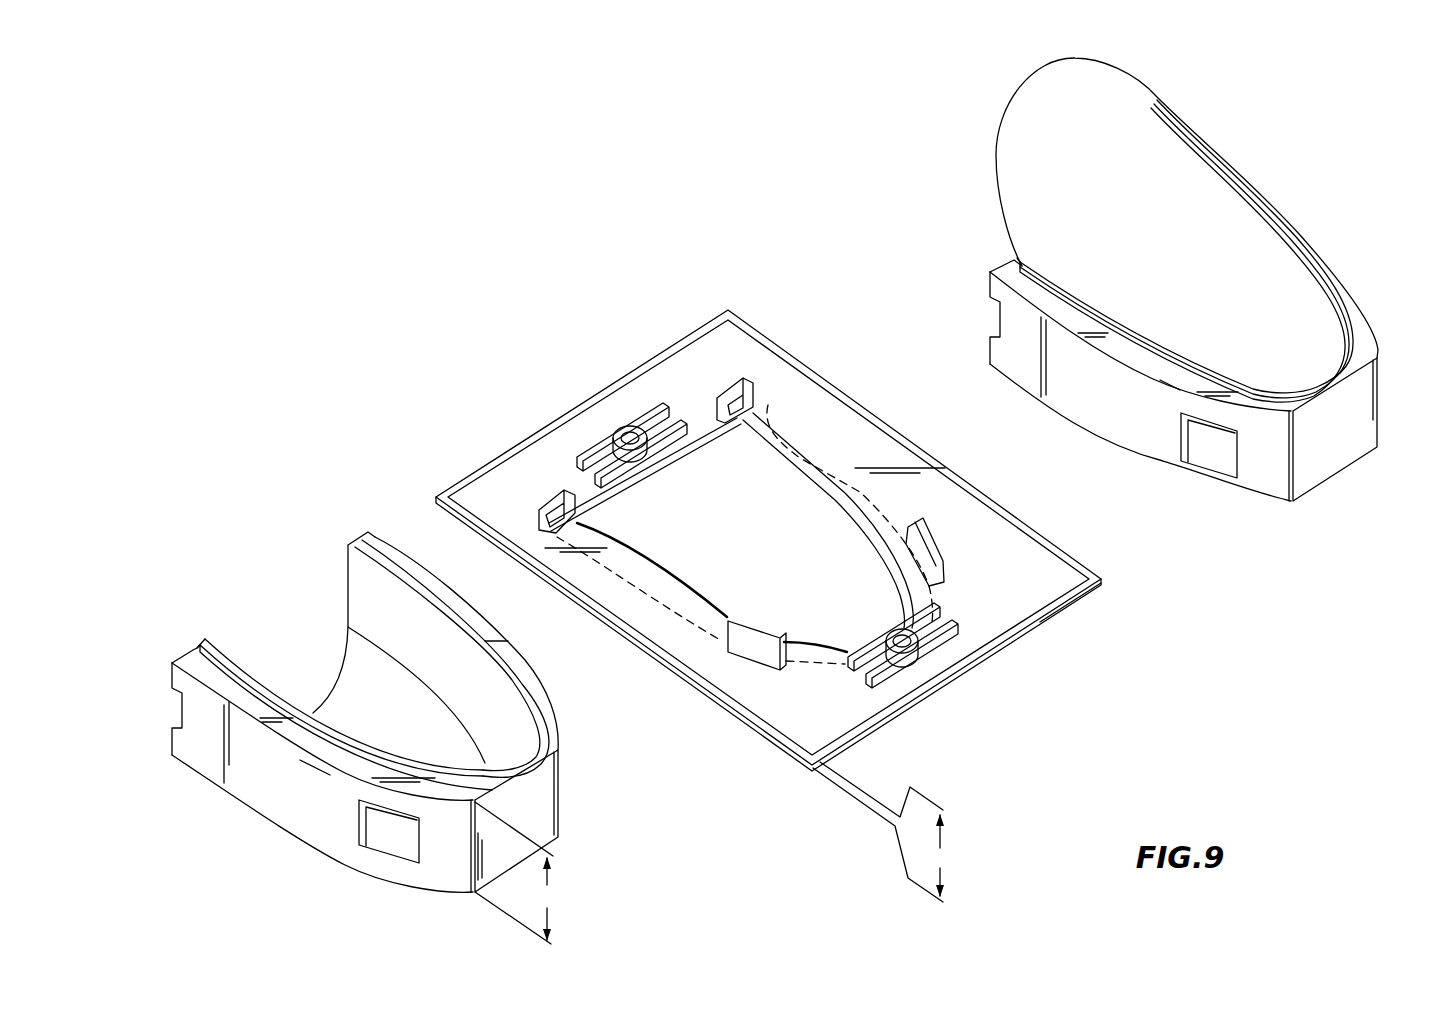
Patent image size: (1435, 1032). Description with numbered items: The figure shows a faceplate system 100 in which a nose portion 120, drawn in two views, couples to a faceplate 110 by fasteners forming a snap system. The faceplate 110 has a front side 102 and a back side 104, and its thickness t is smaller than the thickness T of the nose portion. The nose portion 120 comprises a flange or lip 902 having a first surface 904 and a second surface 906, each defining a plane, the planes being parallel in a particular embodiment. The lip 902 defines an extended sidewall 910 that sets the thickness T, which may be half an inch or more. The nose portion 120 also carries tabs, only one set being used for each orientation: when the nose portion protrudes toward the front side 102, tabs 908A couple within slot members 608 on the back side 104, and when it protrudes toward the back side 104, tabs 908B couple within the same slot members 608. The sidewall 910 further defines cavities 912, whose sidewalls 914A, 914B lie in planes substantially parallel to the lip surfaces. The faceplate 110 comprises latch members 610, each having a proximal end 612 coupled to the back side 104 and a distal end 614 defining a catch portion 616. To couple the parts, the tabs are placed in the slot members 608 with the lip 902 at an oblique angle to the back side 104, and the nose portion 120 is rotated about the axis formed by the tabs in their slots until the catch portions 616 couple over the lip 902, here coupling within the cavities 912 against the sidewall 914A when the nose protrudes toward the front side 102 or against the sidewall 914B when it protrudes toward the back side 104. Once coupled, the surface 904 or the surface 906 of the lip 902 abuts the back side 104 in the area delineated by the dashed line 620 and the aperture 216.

The faceplate system 100 is at (360, 305).
The front side 102 is at (922, 716).
The back side 104 is at (991, 610).
The faceplate 110 is at (1040, 628).
The nose portion 120 is at (268, 610).
The aperture 216 is at (674, 565).
The slot members 608 is at (575, 527).
The latch members 610 is at (893, 542).
The proximal end 612 is at (940, 575).
The distal end 614 is at (915, 546).
The catch portion 616 is at (935, 555).
The dashed line 620 is at (768, 405).
The lip 902 is at (272, 798).
The first surface 904 is at (1327, 260).
The second surface 906 is at (263, 722).
The tabs 908A is at (172, 735).
The tabs 908B is at (352, 544).
The extended sidewall 910 is at (296, 809).
The cavities 912 is at (372, 844).
The sidewall 914A is at (402, 858).
The sidewall 914B is at (1201, 452).